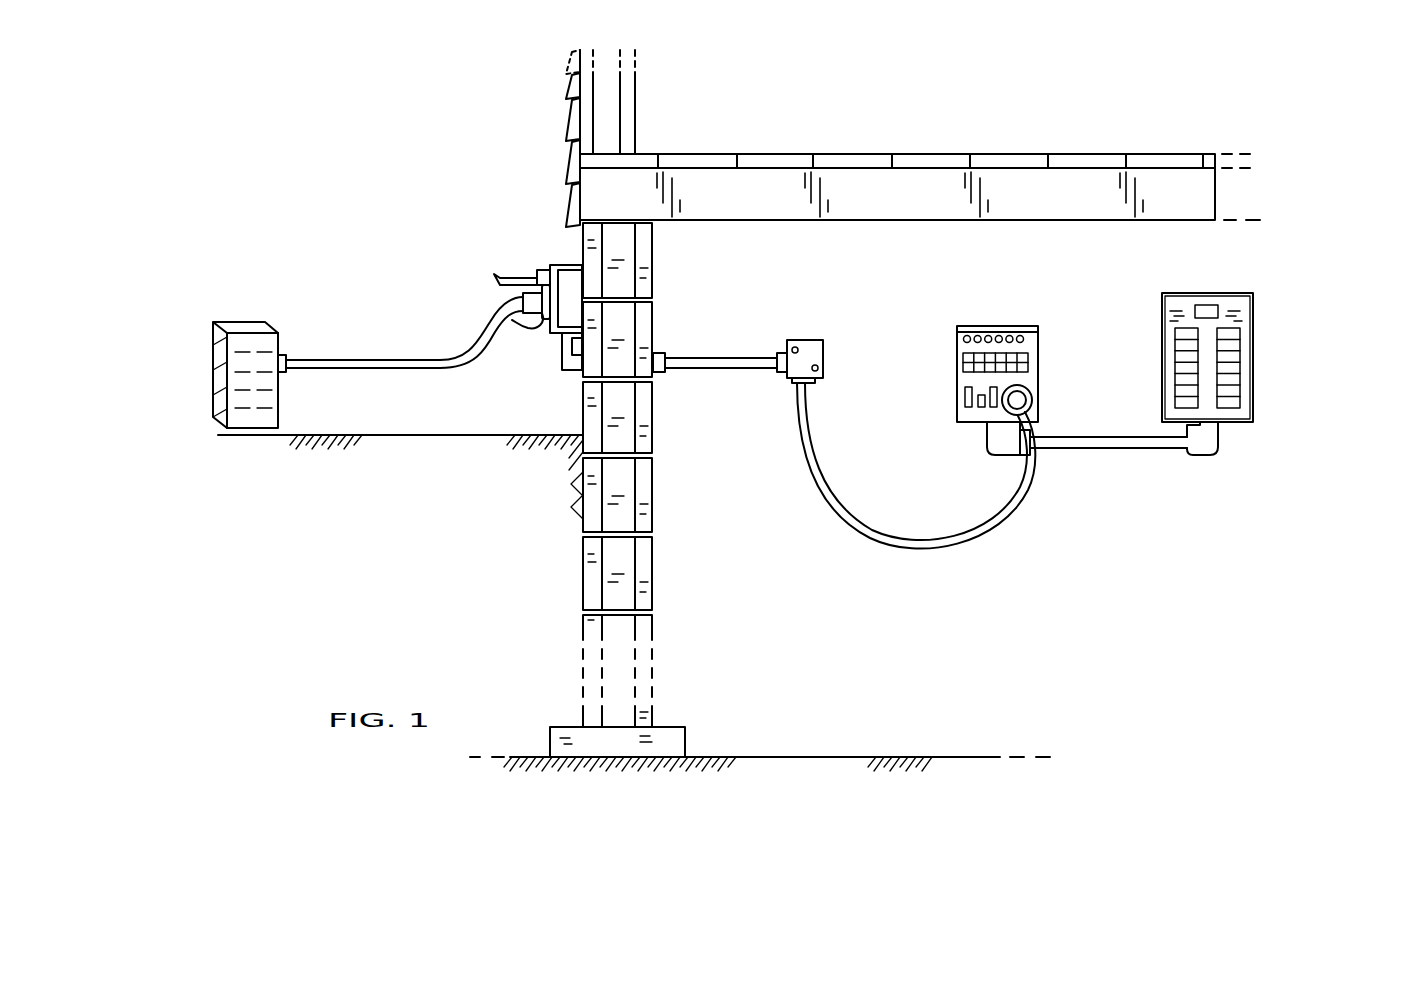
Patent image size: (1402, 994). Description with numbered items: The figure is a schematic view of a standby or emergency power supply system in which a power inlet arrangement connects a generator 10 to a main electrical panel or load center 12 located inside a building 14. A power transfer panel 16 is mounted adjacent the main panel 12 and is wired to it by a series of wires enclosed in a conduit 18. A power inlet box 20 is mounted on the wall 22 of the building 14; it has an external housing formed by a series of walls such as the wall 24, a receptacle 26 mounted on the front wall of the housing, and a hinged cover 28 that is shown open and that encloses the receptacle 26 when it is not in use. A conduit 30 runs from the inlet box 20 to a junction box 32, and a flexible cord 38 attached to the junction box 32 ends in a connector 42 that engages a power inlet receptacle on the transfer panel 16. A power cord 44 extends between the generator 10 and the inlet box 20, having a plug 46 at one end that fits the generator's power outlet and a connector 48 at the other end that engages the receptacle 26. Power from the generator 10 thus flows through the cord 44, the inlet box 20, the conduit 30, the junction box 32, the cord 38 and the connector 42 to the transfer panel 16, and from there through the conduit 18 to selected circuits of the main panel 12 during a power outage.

The generator 10 is at (200, 328).
The main electrical panel 12 is at (1290, 334).
The building 14 is at (535, 74).
The power transfer panel 16 is at (994, 296).
The conduit 18 is at (1123, 452).
The power inlet box 20 is at (542, 234).
The wall 22 is at (583, 410).
The wall of housing 24 is at (570, 340).
The receptacle 26 is at (543, 330).
The cover 28 is at (523, 280).
The conduit 30 is at (683, 355).
The junction box 32 is at (803, 337).
The flexible cord 38 is at (940, 555).
The connector 42 is at (1024, 386).
The power cord 44 is at (414, 370).
The plug 46 is at (283, 352).
The connector 48 is at (490, 318).